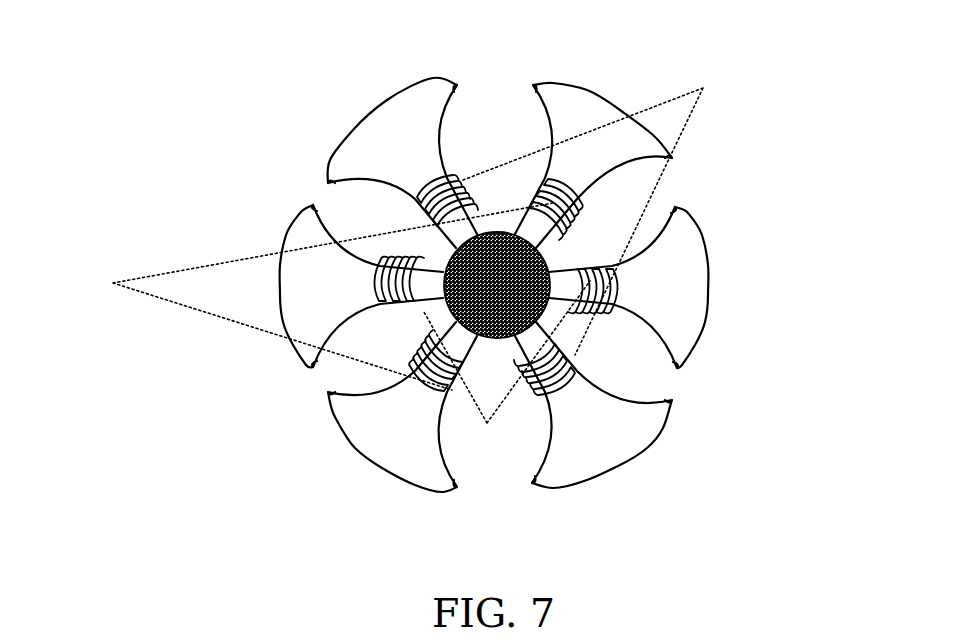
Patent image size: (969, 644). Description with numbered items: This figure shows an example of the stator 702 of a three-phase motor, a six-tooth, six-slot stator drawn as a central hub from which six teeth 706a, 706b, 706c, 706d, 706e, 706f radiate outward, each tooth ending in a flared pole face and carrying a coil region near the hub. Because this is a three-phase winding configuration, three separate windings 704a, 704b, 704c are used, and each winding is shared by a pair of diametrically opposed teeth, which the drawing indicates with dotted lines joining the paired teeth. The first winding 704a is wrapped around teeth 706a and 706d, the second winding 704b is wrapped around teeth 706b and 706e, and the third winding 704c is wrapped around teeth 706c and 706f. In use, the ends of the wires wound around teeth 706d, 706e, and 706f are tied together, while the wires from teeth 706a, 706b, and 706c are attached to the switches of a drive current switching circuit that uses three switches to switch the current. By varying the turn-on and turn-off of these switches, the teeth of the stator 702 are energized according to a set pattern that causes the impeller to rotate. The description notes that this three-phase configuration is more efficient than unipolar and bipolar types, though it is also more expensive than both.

The stator 702 is at (818, 94).
The first winding 704a is at (295, 296).
The second winding 704b is at (507, 370).
The third winding 704c is at (601, 206).
The tooth 706a is at (567, 84).
The tooth 706b is at (710, 268).
The tooth 706c is at (560, 493).
The tooth 706d is at (333, 418).
The tooth 706e is at (297, 217).
The tooth 706f is at (370, 113).